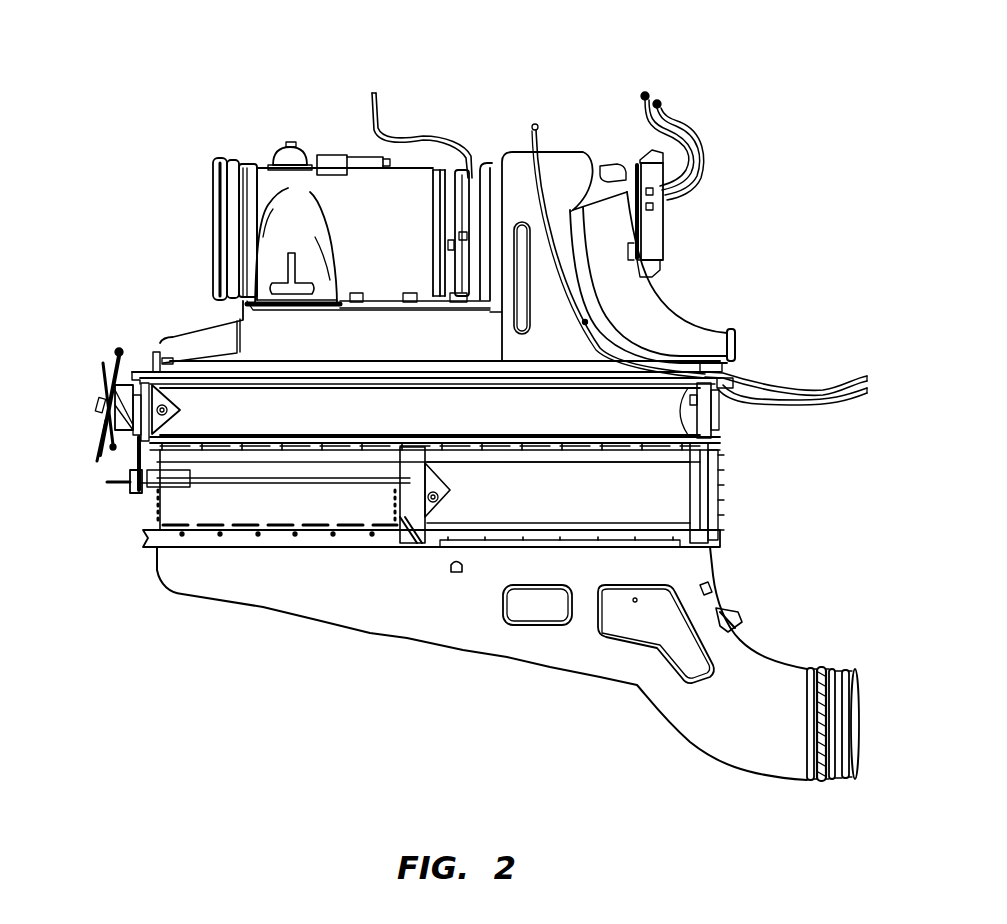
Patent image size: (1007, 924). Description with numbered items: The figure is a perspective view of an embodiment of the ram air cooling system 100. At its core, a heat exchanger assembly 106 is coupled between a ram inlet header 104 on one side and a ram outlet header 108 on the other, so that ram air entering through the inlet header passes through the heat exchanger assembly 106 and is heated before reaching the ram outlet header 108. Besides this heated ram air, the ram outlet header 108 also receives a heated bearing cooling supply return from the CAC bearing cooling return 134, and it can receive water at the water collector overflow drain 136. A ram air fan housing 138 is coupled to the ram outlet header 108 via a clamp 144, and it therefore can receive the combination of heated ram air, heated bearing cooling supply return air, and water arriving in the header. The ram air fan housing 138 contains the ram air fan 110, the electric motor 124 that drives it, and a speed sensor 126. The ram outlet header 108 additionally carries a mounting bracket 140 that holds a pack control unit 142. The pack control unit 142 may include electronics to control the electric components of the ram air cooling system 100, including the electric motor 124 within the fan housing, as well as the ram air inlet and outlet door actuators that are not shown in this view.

The ram air cooling system 100 is at (171, 81).
The ram inlet header 104 is at (383, 605).
The heat exchanger assembly 106 is at (88, 479).
The ram outlet header 108 is at (560, 150).
The ram air fan 110 is at (330, 187).
The electric motor 124 is at (433, 190).
The speed sensor 126 is at (467, 190).
The CAC bearing cooling return 134 is at (737, 347).
The water collector overflow drain 136 is at (535, 122).
The ram air fan housing 138 is at (263, 167).
The mounting bracket 140 is at (627, 160).
The pack control unit 142 is at (660, 228).
The clamp 144 is at (487, 180).